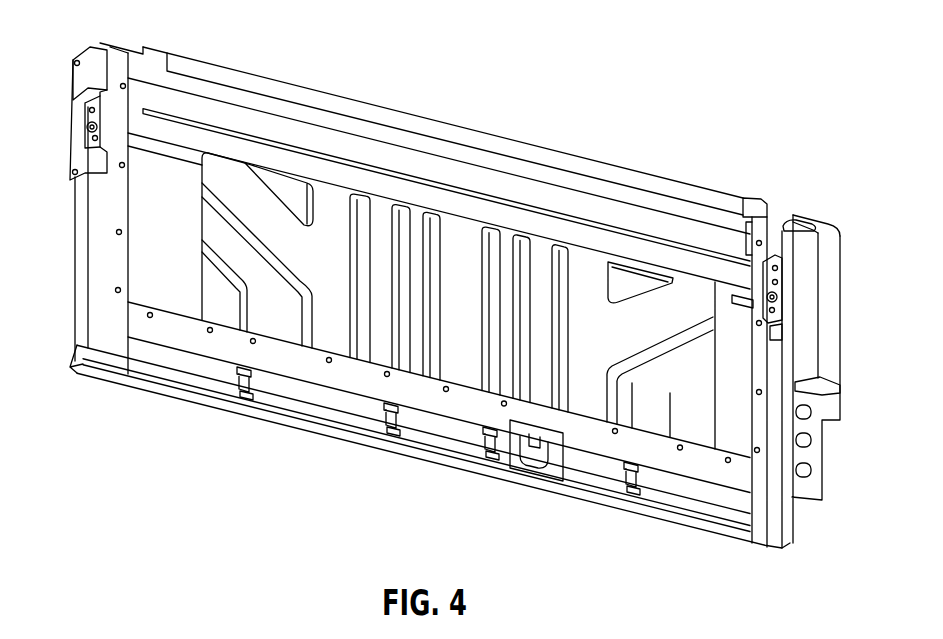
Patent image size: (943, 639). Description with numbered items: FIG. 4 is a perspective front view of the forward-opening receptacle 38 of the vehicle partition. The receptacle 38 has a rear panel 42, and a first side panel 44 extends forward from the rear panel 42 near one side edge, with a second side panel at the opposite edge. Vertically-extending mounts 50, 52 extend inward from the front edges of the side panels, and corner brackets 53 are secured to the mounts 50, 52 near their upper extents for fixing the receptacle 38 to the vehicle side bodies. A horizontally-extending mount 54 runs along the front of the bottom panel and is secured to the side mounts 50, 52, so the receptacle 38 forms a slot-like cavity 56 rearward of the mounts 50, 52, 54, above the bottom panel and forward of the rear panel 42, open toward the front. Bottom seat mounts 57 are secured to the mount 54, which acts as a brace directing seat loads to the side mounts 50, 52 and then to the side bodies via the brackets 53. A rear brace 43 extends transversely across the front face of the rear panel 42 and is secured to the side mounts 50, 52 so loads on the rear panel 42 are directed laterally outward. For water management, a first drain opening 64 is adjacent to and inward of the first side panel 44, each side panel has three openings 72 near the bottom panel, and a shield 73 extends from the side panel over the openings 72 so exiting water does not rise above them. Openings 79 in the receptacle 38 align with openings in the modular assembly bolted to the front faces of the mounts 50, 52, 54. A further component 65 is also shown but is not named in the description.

The forward-opening receptacle 38 is at (605, 136).
The rear panel 42 is at (447, 289).
The rear brace 43 is at (460, 168).
The first side panel 44 is at (805, 360).
The vertically-extending mount 50 is at (778, 511).
The vertically-extending mount 52 is at (100, 221).
The corner brackets 53 is at (83, 111).
The horizontally-extending mount 54 is at (184, 357).
The slot-like cavity 56 is at (604, 351).
The bottom seat mounts 57 is at (236, 378).
The first drain opening 64 is at (797, 221).
The end cap 65 is at (756, 198).
The openings 72 is at (812, 415).
The shield 73 is at (838, 386).
The openings 79 is at (101, 48).